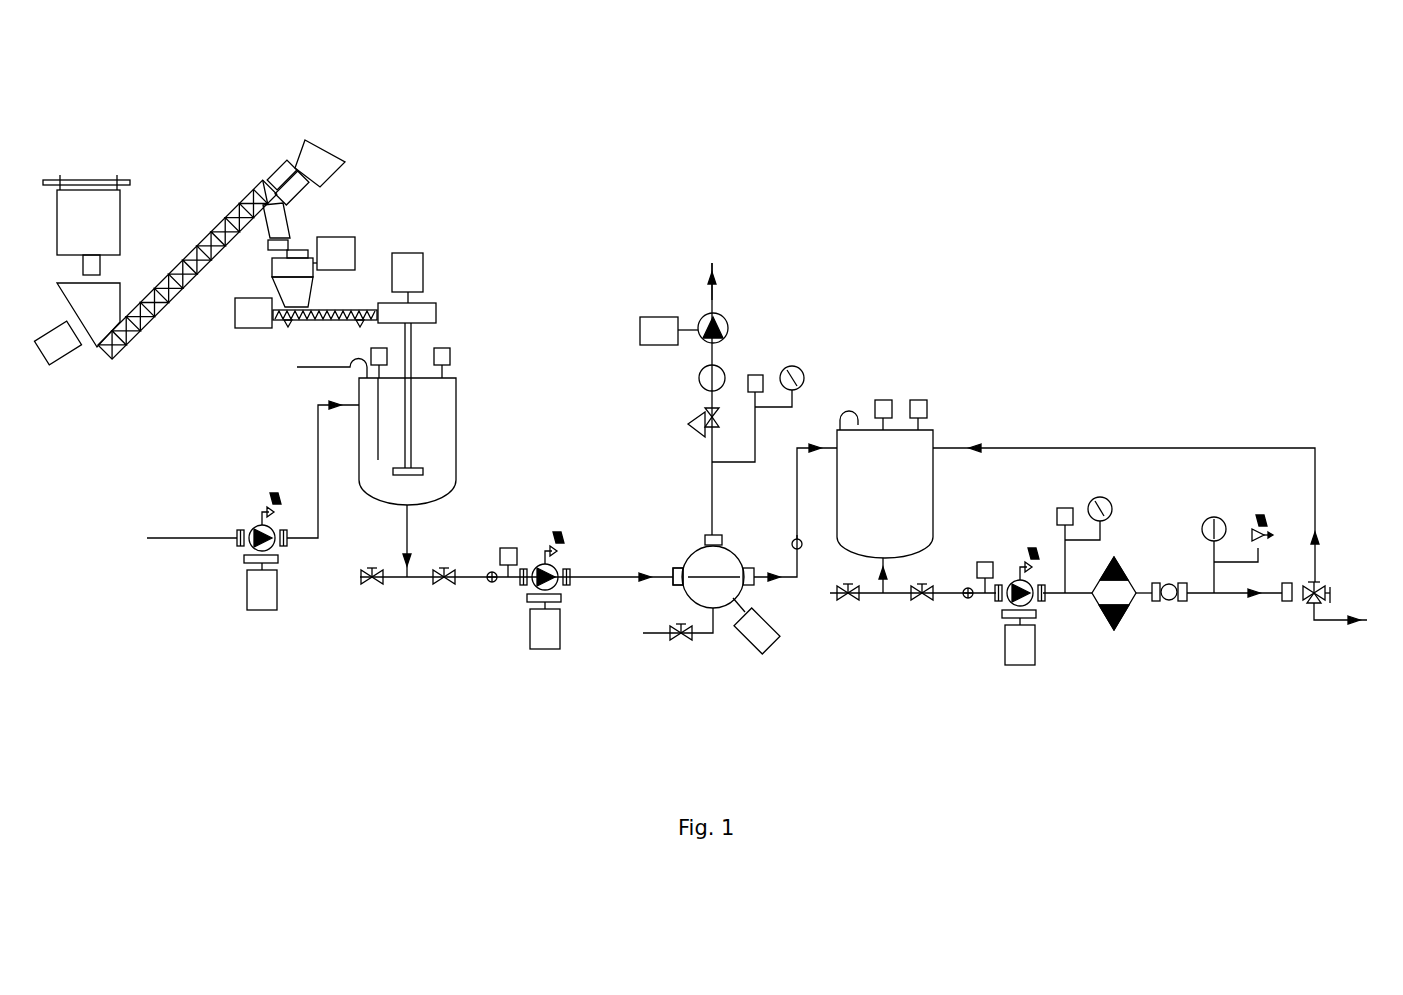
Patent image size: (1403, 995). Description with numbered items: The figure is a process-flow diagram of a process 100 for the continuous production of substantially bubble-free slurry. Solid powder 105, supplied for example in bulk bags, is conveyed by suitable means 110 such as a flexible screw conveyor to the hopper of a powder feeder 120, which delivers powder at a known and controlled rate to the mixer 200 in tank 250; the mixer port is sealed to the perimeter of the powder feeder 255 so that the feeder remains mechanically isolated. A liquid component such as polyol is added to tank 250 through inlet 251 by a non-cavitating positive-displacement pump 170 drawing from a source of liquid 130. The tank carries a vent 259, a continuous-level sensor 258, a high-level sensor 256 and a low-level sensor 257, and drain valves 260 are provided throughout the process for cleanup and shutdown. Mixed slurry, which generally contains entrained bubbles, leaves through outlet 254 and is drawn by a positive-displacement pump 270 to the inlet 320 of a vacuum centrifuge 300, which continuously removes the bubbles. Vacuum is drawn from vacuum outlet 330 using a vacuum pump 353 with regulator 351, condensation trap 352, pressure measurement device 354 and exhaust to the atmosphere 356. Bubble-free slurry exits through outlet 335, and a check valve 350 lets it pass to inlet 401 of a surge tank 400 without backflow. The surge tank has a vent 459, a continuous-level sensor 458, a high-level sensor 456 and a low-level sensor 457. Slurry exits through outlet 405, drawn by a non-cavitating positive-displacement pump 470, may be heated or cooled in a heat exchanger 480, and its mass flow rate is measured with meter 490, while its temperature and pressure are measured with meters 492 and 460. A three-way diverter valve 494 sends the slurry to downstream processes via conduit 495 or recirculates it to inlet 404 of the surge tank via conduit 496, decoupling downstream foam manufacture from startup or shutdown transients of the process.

The process 100 is at (1144, 74).
The solid powder 105 is at (90, 180).
The conveying means 110 is at (220, 223).
The powder feeder 120 is at (259, 277).
The source of liquid 130 is at (178, 538).
The non-cavitating positive-displacement pump 170 is at (253, 532).
The mixer 200 is at (437, 309).
The tank 250 is at (457, 430).
The inlet 251 is at (318, 437).
The outlet 254 is at (408, 530).
The powder feeder 255 is at (340, 305).
The high-level sensor 256 is at (450, 353).
The low-level sensor 257 is at (510, 547).
The continuous-level sensor 258 is at (348, 393).
The vent 259 is at (310, 362).
The drain valves 260 is at (373, 585).
The positive-displacement pump 270 is at (513, 607).
The vacuum centrifuge 300 is at (680, 597).
The inlet 320 is at (683, 562).
The vacuum outlet 330 is at (700, 527).
The outlet 335 is at (753, 587).
The check valve 350 is at (792, 538).
The regulator 351 is at (695, 412).
The condensation trap 352 is at (700, 375).
The vacuum pump 353 is at (700, 317).
The pressure measurement device 354 is at (758, 375).
The exhaust to the atmosphere 356 is at (710, 263).
The surge tank 400 is at (933, 447).
The inlet 401 is at (805, 447).
The inlet 404 is at (945, 447).
The outlet 405 is at (887, 562).
The high-level sensor 456 is at (925, 400).
The low-level sensor 457 is at (983, 562).
The continuous-level sensor 458 is at (890, 400).
The vent 459 is at (848, 410).
The pressure meter 460 is at (1073, 508).
The non-cavitating positive-displacement pump 470 is at (1033, 605).
The heat exchanger 480 is at (1110, 565).
The mass-flow meter 490 is at (1170, 597).
The temperature meter 492 is at (1218, 517).
The three-way diverter valve 494 is at (1318, 582).
The conduit 495 is at (1325, 623).
The recirculation conduit 496 is at (1168, 447).